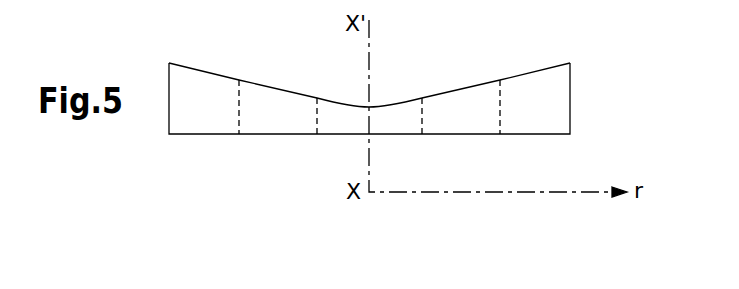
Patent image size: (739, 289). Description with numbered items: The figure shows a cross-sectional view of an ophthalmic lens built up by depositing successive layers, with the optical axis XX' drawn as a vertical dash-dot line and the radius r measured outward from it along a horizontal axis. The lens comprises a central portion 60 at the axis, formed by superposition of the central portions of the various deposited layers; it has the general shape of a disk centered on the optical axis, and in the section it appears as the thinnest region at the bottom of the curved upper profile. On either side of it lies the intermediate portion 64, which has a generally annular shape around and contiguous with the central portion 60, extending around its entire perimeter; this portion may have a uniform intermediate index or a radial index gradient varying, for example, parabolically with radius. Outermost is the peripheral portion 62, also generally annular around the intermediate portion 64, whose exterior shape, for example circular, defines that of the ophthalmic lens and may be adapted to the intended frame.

The central portion 60 is at (392, 115).
The intermediate portion 64 is at (462, 102).
The peripheral portion 62 is at (529, 87).